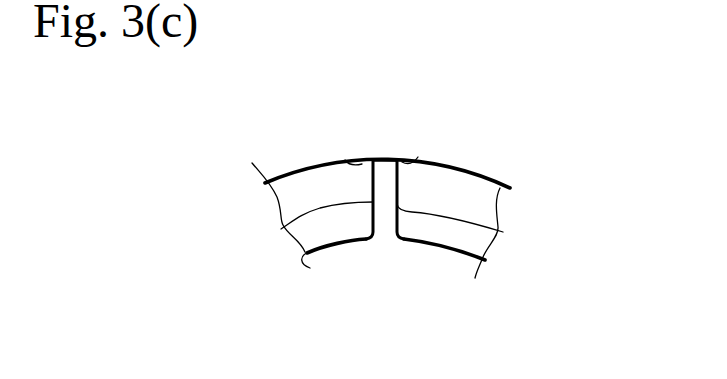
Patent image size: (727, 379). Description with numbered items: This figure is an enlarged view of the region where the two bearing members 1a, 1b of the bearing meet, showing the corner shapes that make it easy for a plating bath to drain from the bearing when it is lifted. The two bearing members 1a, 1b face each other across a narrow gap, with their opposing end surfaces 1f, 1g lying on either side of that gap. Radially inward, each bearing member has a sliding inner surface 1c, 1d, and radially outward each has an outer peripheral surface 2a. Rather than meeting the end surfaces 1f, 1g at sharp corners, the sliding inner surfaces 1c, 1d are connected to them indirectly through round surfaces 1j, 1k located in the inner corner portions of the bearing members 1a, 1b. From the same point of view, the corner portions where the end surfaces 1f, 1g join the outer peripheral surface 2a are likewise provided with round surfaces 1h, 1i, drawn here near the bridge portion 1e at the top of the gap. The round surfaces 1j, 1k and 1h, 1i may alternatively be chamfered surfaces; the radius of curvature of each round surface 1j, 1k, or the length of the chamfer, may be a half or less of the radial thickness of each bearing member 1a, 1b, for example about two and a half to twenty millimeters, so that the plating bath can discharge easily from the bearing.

The outer peripheral surface of core piece 2a is at (469, 168).
The bearing member 1a is at (291, 182).
The bearing member 1b is at (500, 188).
The sliding inner surface 1c is at (318, 255).
The sliding inner surface 1d is at (469, 256).
The bridge portion over slot 1e is at (381, 157).
The end surface 1f is at (281, 229).
The end surface 1g is at (503, 232).
The round surface 1h is at (345, 160).
The round surface 1i is at (418, 157).
The round surface 1j is at (374, 240).
The round surface 1k is at (396, 240).